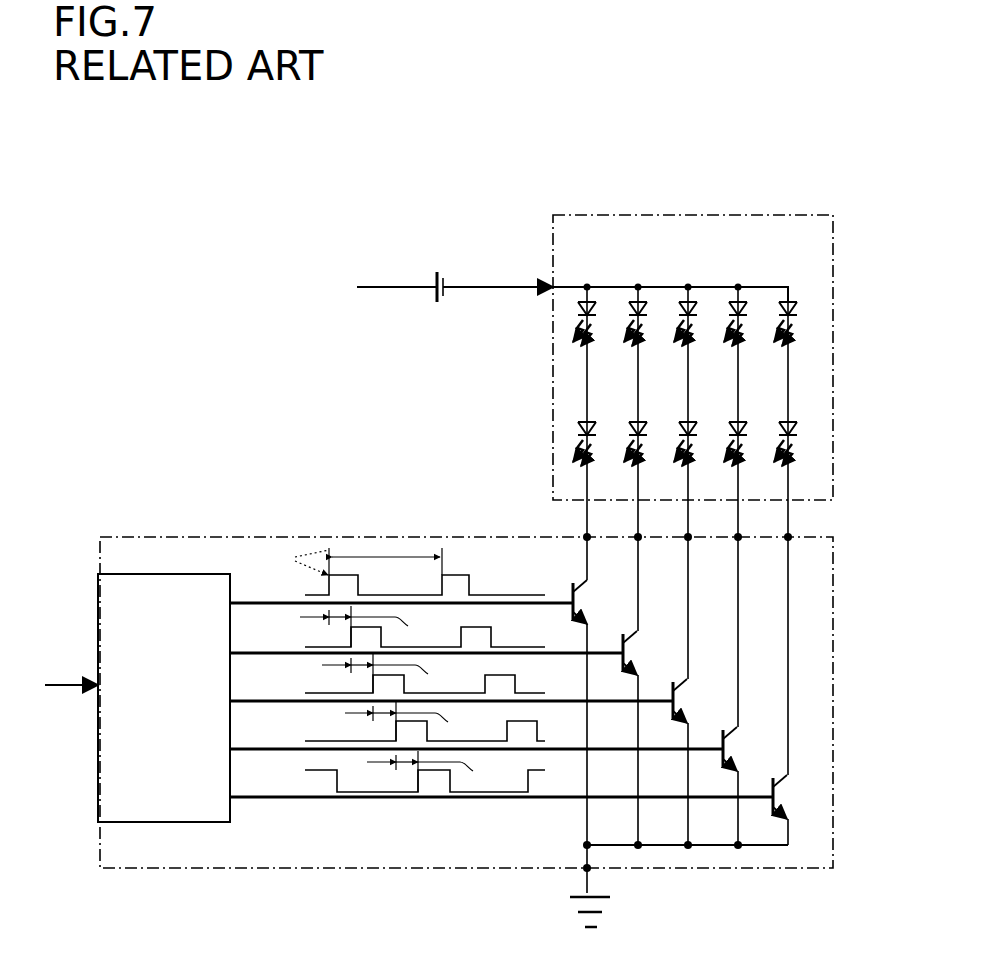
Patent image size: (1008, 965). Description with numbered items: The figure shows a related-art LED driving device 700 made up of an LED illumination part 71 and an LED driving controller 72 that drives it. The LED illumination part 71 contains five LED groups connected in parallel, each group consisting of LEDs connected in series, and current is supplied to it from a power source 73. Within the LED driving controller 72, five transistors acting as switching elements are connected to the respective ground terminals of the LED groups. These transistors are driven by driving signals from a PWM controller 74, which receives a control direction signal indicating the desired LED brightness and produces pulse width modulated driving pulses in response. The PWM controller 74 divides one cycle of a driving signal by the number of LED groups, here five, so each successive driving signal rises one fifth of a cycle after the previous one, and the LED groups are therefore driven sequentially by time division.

The LED driving device 700 is at (493, 177).
The LED illumination part 71 is at (833, 273).
The LED driving controller 72 is at (835, 556).
The power source 73 is at (447, 278).
The PWM controller 74 is at (98, 605).